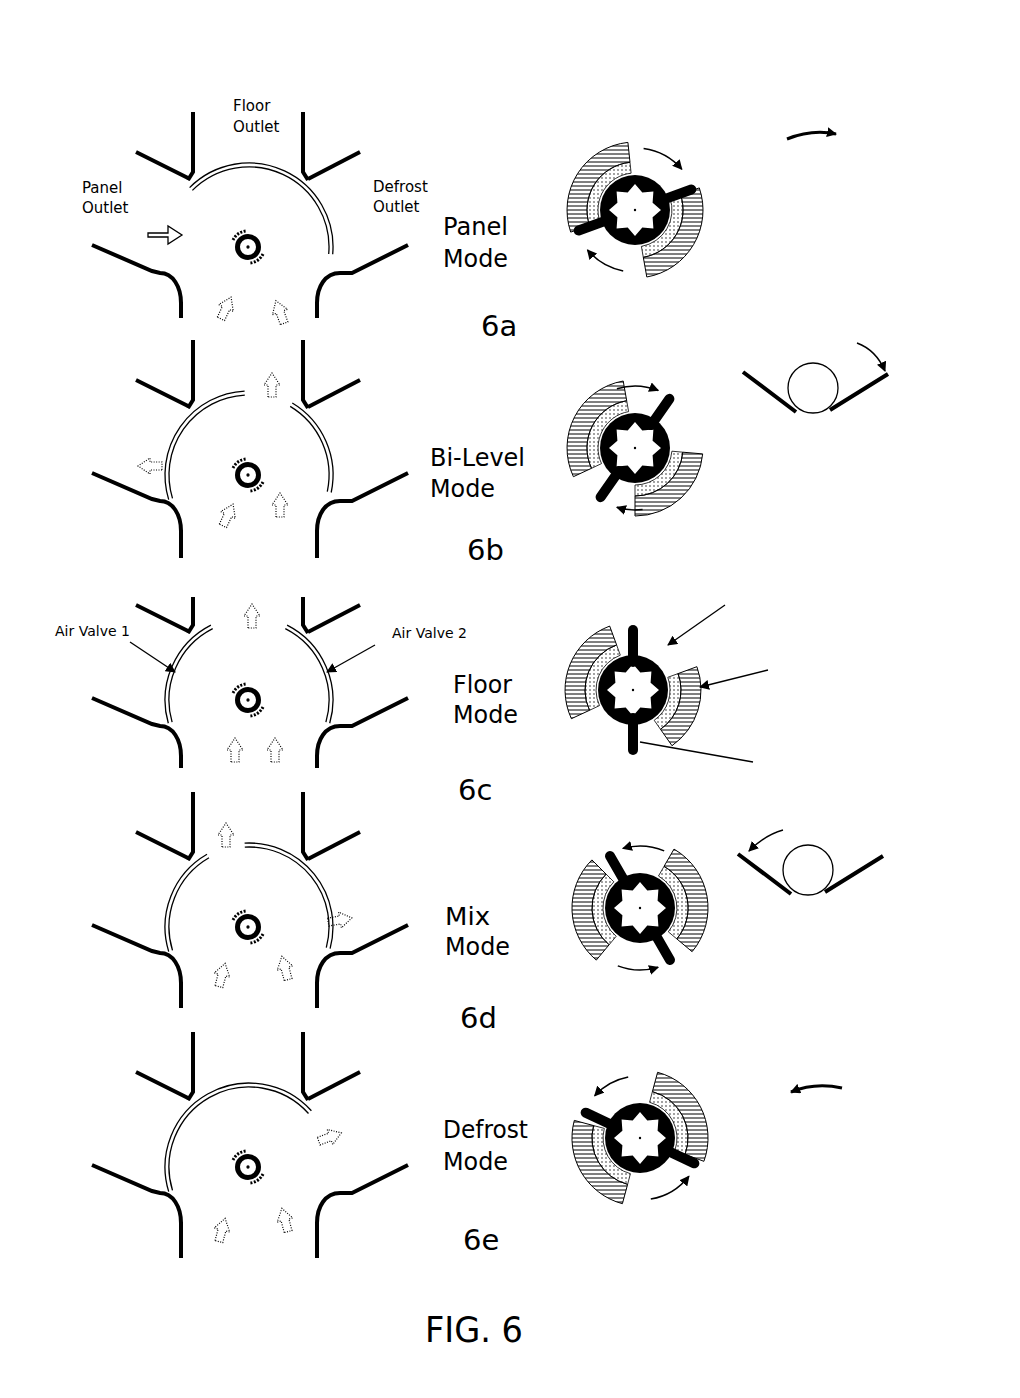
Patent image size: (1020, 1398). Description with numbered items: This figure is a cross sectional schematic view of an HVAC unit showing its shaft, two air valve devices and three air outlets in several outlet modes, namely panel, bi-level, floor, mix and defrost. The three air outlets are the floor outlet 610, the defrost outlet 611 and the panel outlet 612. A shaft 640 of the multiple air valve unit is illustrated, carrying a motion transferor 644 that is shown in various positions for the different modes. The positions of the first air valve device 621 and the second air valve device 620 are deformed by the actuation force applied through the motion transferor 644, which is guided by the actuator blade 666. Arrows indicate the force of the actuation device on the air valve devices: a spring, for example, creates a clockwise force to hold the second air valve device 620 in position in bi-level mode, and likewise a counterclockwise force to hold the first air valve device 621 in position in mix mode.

The floor outlet 610 is at (288, 95).
The defrost outlet 611 is at (405, 165).
The panel outlet 612 is at (108, 168).
The second air valve device 620 is at (335, 445).
The first air valve device 621 is at (175, 430).
The shaft 640 is at (265, 263).
The motion transferor 644 is at (638, 176).
The actuator blade 666 is at (695, 180).